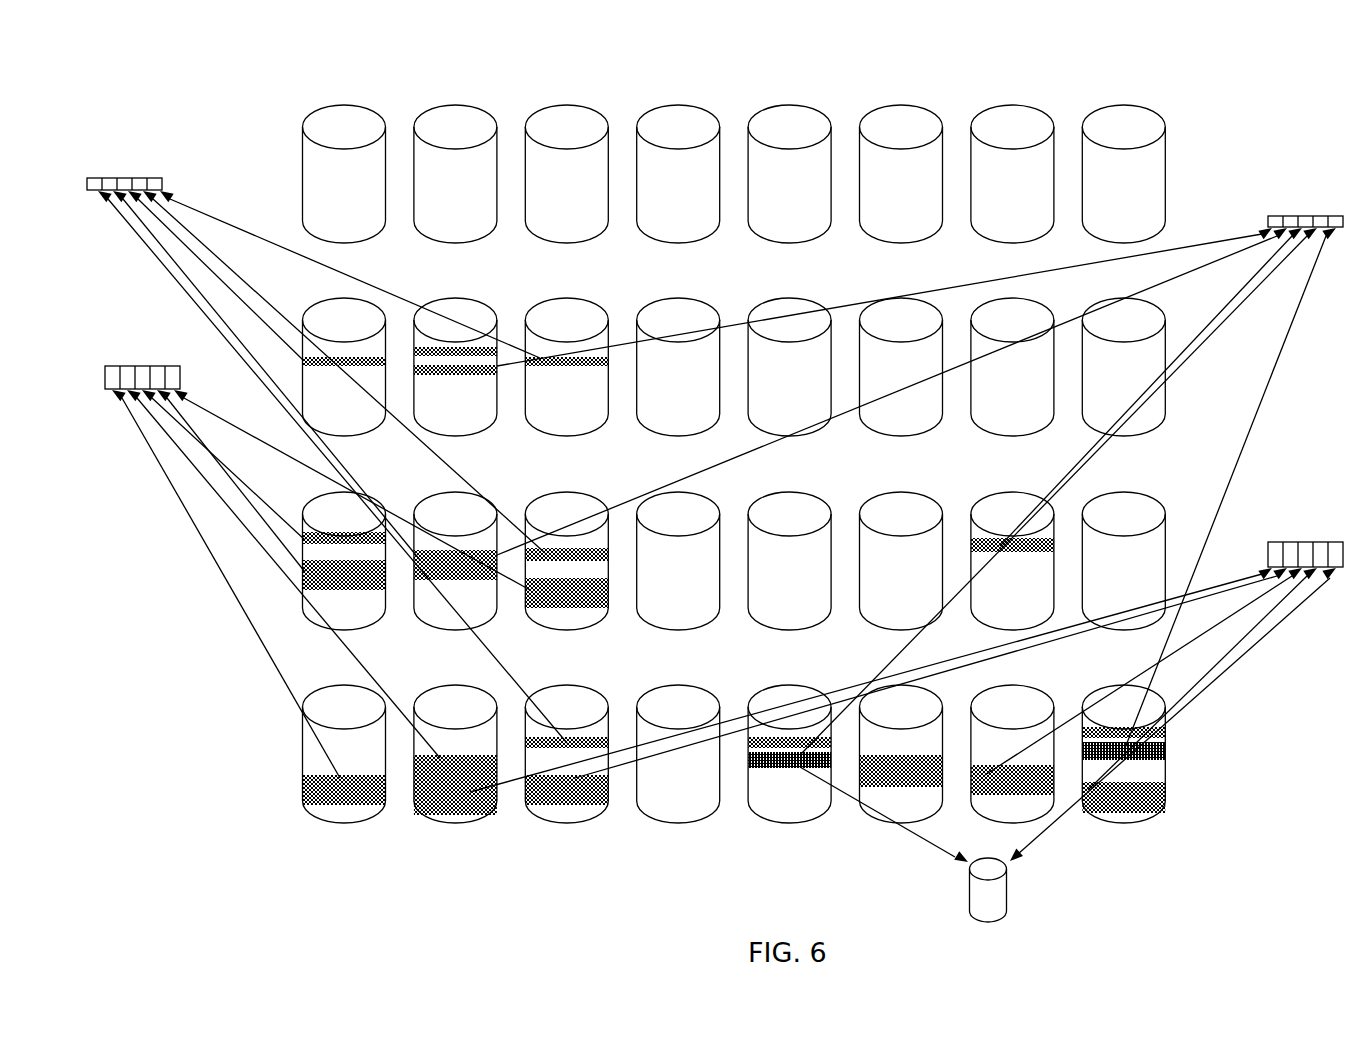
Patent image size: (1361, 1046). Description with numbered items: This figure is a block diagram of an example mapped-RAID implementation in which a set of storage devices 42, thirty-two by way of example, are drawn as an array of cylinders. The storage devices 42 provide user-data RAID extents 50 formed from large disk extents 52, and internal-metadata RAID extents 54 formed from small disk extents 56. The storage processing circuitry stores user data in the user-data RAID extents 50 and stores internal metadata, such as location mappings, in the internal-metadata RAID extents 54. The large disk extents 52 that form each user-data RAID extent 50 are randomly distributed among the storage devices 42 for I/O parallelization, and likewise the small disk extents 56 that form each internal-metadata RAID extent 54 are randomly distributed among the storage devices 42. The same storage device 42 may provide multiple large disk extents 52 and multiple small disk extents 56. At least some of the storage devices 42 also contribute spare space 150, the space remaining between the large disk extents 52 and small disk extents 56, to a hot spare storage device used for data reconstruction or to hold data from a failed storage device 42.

The storage devices 42 is at (276, 92).
The internal-metadata RAID extents 54 is at (314, 419).
The small disk extents 56 is at (84, 212).
The user-data RAID extents 50 is at (304, 534).
The large disk extents 52 is at (98, 414).
The spare space 150 is at (1090, 752).